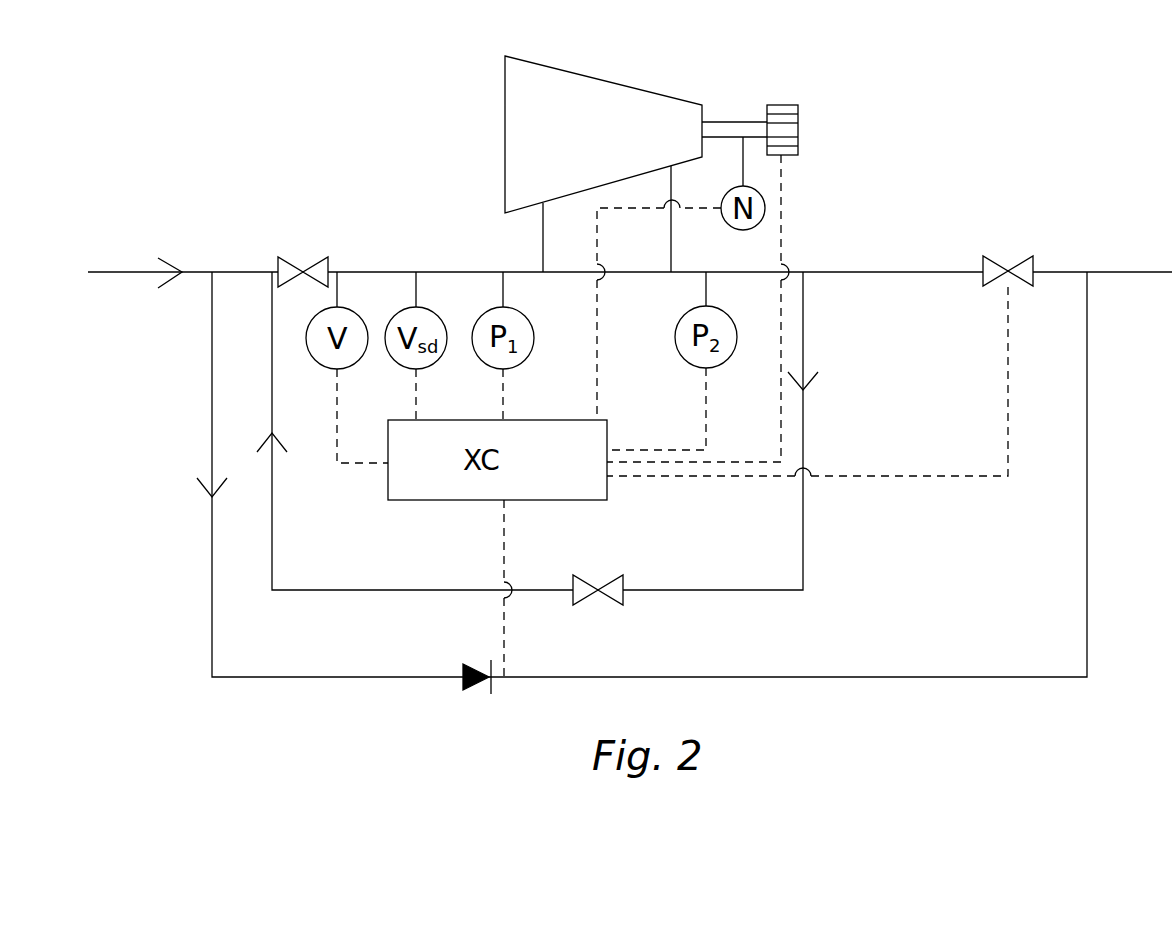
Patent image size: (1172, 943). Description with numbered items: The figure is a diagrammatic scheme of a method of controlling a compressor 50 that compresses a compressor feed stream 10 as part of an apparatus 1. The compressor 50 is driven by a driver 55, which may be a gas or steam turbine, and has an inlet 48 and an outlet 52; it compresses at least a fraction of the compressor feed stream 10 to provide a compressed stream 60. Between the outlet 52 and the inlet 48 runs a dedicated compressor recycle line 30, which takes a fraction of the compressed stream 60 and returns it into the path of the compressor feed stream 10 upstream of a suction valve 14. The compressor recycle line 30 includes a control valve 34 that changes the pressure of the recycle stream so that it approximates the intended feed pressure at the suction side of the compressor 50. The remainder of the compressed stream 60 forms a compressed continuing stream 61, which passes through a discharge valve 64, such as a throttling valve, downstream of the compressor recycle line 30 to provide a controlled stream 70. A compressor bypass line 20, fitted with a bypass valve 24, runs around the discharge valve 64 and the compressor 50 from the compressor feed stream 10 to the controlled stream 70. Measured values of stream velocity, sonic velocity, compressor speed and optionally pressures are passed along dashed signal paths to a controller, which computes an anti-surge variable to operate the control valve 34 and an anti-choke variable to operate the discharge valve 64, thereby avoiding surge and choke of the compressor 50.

The apparatus 1 is at (350, 131).
The compressor feed stream 10 is at (133, 272).
The suction valve 14 is at (317, 262).
The compressor bypass line 20 is at (212, 577).
The bypass valve 24 is at (462, 668).
The compressor recycle line 30 is at (804, 528).
The control valve 34 is at (623, 595).
The inlet 48 is at (545, 200).
The compressor 50 is at (603, 146).
The outlet 52 is at (672, 165).
The driver 55 is at (785, 105).
The compressed stream 60 is at (680, 272).
The compressed continuing stream 61 is at (880, 271).
The discharge valve 64 is at (993, 258).
The controlled stream 70 is at (1062, 271).